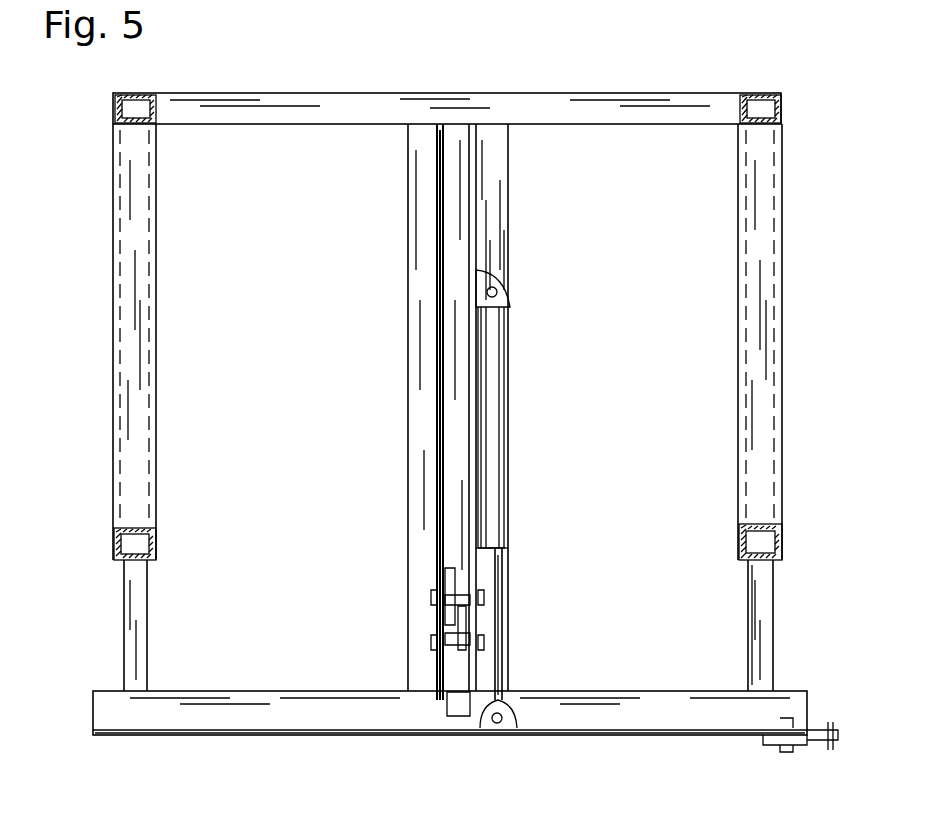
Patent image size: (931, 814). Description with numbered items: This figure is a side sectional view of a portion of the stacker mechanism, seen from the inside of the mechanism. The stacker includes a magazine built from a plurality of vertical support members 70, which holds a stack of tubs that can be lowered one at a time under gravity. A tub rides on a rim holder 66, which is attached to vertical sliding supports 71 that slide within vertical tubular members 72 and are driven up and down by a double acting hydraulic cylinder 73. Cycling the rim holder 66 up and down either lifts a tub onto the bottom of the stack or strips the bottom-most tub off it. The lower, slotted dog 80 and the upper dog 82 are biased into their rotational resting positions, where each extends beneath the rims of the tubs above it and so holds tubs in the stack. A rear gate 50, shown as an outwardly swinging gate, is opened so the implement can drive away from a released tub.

The rear gate 50 is at (805, 700).
The rim holder 66 is at (410, 735).
The vertical support members 70 is at (140, 350).
The vertical sliding supports 71 is at (763, 578).
The vertical tubular members 72 is at (152, 465).
The double acting hydraulic cylinder 73 is at (492, 385).
The lower slotted dog 80 is at (460, 625).
The upper dog 82 is at (450, 580).